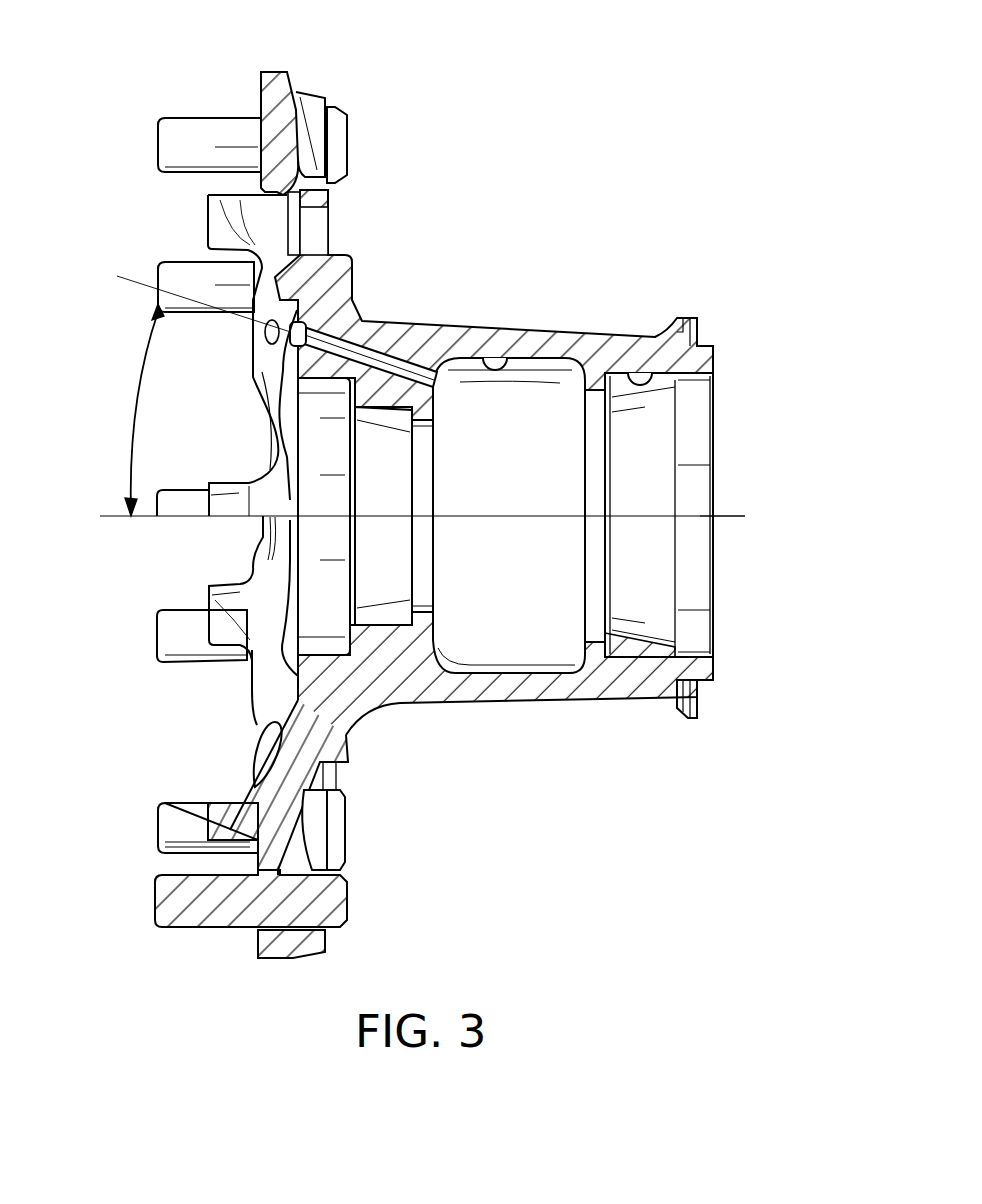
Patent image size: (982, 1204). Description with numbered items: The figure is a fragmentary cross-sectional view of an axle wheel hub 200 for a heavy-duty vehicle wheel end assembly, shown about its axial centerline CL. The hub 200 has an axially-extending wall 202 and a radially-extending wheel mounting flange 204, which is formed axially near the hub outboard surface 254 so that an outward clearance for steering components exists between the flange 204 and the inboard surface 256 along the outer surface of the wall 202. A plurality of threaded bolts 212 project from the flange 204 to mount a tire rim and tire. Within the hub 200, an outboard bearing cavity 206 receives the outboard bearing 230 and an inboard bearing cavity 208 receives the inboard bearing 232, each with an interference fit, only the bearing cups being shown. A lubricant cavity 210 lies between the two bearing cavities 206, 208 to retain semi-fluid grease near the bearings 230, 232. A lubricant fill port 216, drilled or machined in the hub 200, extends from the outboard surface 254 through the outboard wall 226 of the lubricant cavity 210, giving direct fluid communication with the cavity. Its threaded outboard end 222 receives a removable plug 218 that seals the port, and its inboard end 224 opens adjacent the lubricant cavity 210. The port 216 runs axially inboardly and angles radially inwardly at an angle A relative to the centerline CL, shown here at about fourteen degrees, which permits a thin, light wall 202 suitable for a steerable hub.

The axle wheel hub 200 is at (543, 190).
The axially-extending wall 202 is at (463, 345).
The wheel mounting flange 204 is at (285, 803).
The outboard bearing cavity 206 is at (368, 410).
The inboard bearing cavity 208 is at (652, 392).
The lubricant cavity 210 is at (515, 370).
The threaded bolts 212 is at (203, 118).
The lubricant fill port 216 is at (350, 340).
The removable plug 218 is at (303, 340).
The outboard end 222 is at (283, 405).
The inboard end 224 is at (430, 378).
The outboard wall 226 is at (433, 545).
The outboard bearing 230 is at (387, 413).
The inboard bearing 232 is at (648, 385).
The outboard surface 254 is at (298, 675).
The inboard surface 256 is at (715, 668).
The angle A is at (208, 396).
The axial centerline CL is at (718, 518).